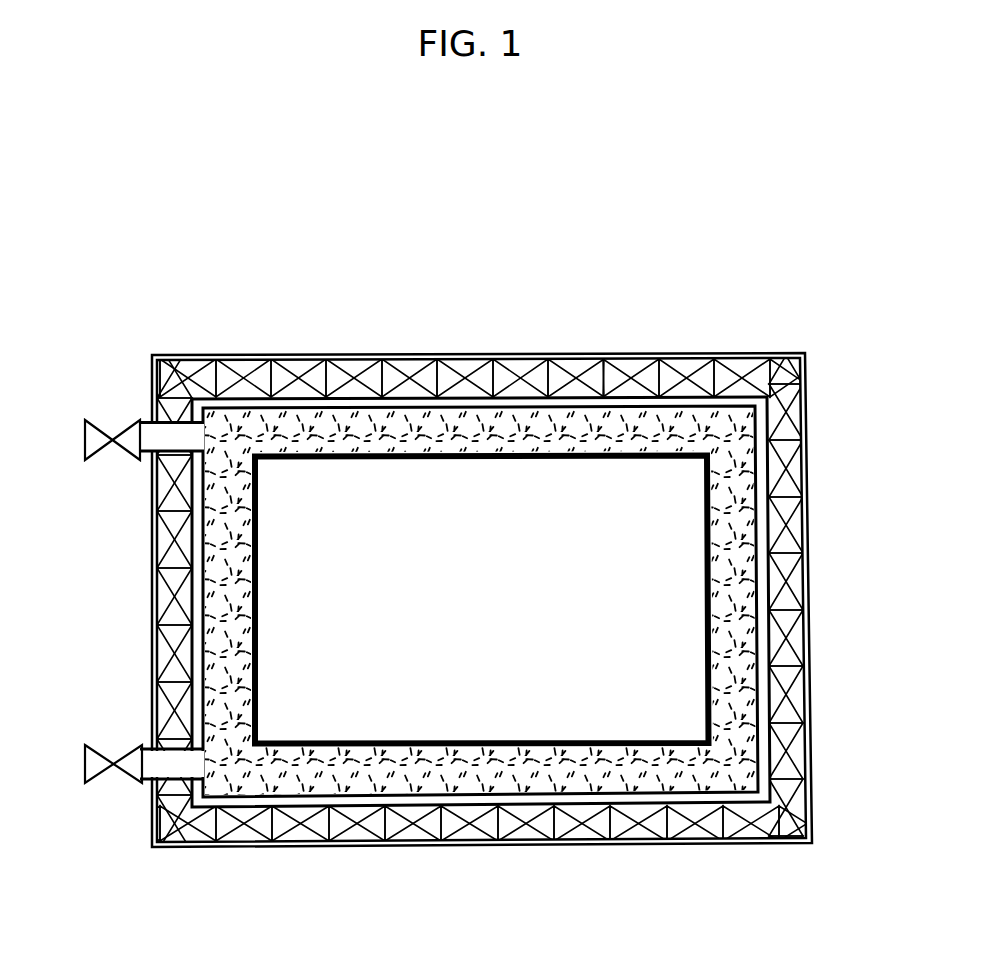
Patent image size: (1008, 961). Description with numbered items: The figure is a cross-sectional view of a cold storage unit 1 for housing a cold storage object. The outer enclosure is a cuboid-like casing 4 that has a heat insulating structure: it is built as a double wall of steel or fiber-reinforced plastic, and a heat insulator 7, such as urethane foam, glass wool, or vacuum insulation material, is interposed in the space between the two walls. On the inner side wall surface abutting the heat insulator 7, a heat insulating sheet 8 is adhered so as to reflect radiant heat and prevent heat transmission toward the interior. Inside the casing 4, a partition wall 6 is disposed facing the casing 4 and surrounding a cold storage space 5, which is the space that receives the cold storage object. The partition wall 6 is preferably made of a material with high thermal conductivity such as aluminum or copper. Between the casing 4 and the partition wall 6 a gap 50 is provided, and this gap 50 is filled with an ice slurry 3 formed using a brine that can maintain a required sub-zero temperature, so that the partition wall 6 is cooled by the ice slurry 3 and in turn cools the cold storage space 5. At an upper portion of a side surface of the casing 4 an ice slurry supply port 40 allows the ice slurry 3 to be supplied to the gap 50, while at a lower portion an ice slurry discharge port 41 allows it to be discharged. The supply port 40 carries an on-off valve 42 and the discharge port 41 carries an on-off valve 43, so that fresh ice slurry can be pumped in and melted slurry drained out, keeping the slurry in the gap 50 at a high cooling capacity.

The cold storage unit 1 is at (636, 224).
The ice slurry 3 is at (518, 770).
The casing 4 is at (700, 353).
The cold storage space 5 is at (495, 625).
The partition wall 6 is at (614, 458).
The heat insulator 7 is at (790, 394).
The heat insulating sheet 8 is at (772, 520).
The ice slurry supply port 40 is at (152, 457).
The ice slurry discharge port 41 is at (155, 748).
The on-off valve 42 is at (93, 436).
The on-off valve 43 is at (85, 783).
The gap 50 is at (625, 773).